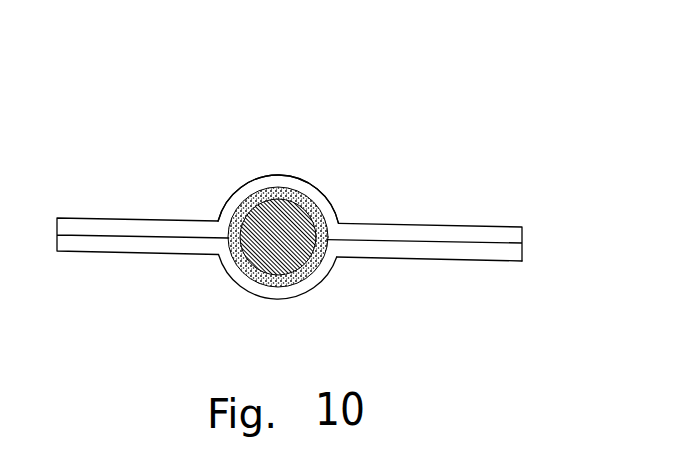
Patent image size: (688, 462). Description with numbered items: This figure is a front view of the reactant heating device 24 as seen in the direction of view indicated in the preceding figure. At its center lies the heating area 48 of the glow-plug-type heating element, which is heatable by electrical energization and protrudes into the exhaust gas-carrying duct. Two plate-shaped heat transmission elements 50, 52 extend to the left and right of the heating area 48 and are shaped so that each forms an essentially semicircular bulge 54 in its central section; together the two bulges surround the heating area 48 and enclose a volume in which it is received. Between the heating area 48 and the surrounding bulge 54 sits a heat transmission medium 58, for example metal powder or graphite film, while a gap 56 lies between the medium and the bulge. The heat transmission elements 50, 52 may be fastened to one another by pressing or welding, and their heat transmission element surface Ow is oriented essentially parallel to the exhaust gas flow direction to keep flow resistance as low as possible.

The reactant heating device 24 is at (371, 115).
The heating area 48 is at (269, 233).
The heat transmission element 50 is at (432, 225).
The heat transmission element 52 is at (465, 262).
The semicircular bulge 54 is at (254, 178).
The gap between sheath and coating 56 is at (244, 293).
The heat transmission medium 58 is at (240, 257).
The heat transmission element surface Ow is at (90, 218).